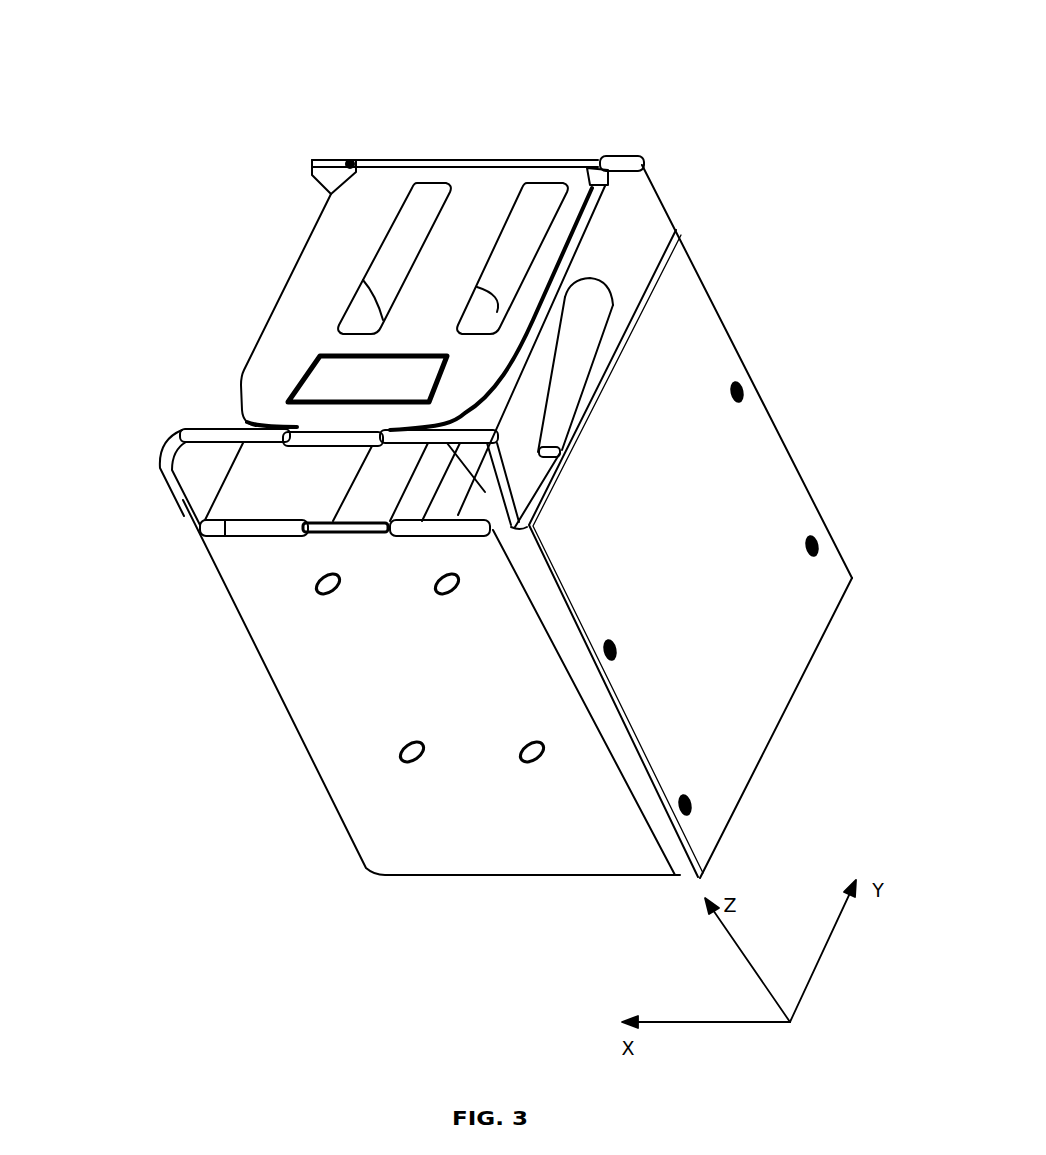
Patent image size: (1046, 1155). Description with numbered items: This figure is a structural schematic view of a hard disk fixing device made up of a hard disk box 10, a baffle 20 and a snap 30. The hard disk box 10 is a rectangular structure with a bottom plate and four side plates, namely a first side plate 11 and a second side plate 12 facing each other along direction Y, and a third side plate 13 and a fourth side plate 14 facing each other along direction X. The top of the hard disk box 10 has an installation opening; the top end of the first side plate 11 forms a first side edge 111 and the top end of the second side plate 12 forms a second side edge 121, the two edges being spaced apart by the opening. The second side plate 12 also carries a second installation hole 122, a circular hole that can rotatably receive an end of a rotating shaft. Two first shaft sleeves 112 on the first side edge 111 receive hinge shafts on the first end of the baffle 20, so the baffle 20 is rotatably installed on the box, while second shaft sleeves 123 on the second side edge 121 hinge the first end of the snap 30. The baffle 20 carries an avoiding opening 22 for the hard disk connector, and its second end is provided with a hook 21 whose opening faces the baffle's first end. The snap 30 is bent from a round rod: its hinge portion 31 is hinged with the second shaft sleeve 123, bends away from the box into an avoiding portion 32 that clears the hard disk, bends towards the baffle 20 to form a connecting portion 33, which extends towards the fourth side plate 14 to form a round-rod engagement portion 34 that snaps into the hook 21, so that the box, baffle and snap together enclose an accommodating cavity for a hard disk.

The hard disk box 10 is at (818, 494).
The first side plate 11 is at (623, 308).
The first side edge 111 is at (613, 217).
The first shaft sleeve 112 is at (623, 157).
The second side plate 12 is at (493, 835).
The second side edge 121 is at (383, 522).
The second installation hole 122 is at (417, 753).
The second shaft sleeve 123 is at (240, 520).
The third side plate 13 is at (717, 747).
The fourth side plate 14 is at (283, 482).
The baffle 20 is at (473, 205).
The hook 21 is at (333, 432).
The avoiding opening 22 is at (422, 205).
The snap 30 is at (214, 416).
The hinge portion 31 is at (489, 527).
The avoiding portion 32 is at (500, 490).
The connecting portion 33 is at (495, 452).
The engagement portion 34 is at (445, 428).